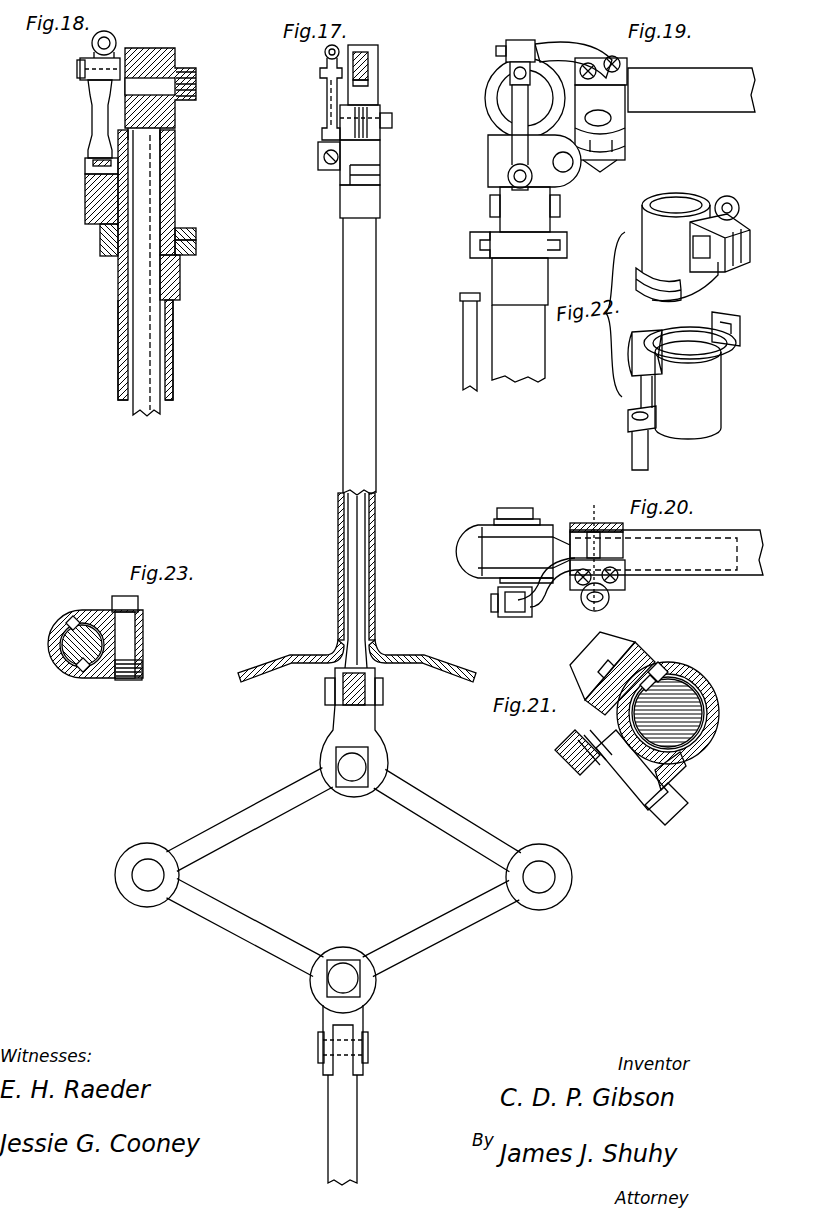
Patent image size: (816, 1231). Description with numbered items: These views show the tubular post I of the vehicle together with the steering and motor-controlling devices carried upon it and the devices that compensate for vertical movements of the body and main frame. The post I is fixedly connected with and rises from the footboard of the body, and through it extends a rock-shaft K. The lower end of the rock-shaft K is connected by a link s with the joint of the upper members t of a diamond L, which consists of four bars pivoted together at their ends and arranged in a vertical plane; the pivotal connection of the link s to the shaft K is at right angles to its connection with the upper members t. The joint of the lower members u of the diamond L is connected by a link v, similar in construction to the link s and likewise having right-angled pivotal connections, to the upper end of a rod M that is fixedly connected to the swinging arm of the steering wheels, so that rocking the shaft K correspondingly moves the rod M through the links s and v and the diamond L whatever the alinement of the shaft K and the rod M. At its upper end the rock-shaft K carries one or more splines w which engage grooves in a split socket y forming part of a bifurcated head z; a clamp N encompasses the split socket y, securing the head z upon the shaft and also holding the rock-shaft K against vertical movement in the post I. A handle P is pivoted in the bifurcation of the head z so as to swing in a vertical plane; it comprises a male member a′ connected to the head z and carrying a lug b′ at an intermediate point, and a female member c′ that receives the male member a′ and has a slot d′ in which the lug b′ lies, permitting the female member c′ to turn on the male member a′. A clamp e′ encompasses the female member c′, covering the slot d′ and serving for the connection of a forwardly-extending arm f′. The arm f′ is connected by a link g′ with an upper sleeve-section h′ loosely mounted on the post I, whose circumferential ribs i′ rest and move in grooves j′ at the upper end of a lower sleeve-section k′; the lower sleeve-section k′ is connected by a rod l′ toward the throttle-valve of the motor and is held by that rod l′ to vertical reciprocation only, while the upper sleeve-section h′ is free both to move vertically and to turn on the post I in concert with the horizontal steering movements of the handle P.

In FIG. 18, the bifurcated head z is at (184, 66).
In FIG. 17, the bifurcated head z is at (378, 80).
In FIG. 18, the link g′ is at (98, 115).
In FIG. 17, the link g′ is at (326, 96).
In FIG. 19, the link g′ is at (515, 120).
In FIG. 18, the split socket y is at (168, 150).
In FIG. 17, the split socket y is at (393, 118).
In FIG. 23, the split socket y is at (63, 625).
In FIG. 18, the clamp N is at (180, 173).
In FIG. 17, the clamp N is at (384, 131).
In FIG. 19, the clamp N is at (497, 155).
In FIG. 23, the clamp N is at (140, 630).
In FIG. 18, the splines w is at (138, 170).
In FIG. 20, the splines w is at (597, 557).
In FIG. 23, the splines w is at (76, 620).
In FIG. 18, the sleeve-section h′ is at (176, 212).
In FIG. 17, the sleeve-section h′ is at (372, 153).
In FIG. 19, the sleeve-section h′ is at (556, 228).
In FIG. 22, the sleeve-section h′ is at (677, 247).
In FIG. 18, the circumferential ribs i′ is at (192, 228).
In FIG. 19, the circumferential ribs i′ is at (490, 230).
In FIG. 22, the circumferential ribs i′ is at (684, 342).
In FIG. 18, the grooves j′ is at (190, 245).
In FIG. 19, the grooves j′ is at (567, 252).
In FIG. 22, the grooves j′ is at (716, 316).
In FIG. 18, the sleeve-section k′ is at (181, 280).
In FIG. 17, the sleeve-section k′ is at (372, 203).
In FIG. 19, the sleeve-section k′ is at (520, 281).
In FIG. 22, the sleeve-section k′ is at (688, 390).
In FIG. 18, the rock-shaft K is at (152, 370).
In FIG. 17, the rock-shaft K is at (358, 545).
In FIG. 17, the tubular post I is at (377, 362).
In FIG. 19, the tubular post I is at (518, 343).
In FIG. 17, the link s is at (378, 732).
In FIG. 17, the upper members t is at (440, 796).
In FIG. 17, the diamond L is at (343, 890).
In FIG. 17, the lower members u is at (480, 914).
In FIG. 17, the link v is at (368, 1030).
In FIG. 17, the rod M is at (366, 1104).
In FIG. 19, the forwardly-extending arm f′ is at (572, 56).
In FIG. 20, the forwardly-extending arm f′ is at (556, 600).
In FIG. 19, the handle P is at (701, 108).
In FIG. 20, the handle P is at (666, 564).
In FIG. 19, the rod l′ is at (468, 352).
In FIG. 22, the rod l′ is at (646, 452).
In FIG. 20, the male member a′ is at (728, 536).
In FIG. 21, the male member a′ is at (716, 742).
In FIG. 20, the lug b′ is at (605, 548).
In FIG. 21, the lug b′ is at (654, 670).
In FIG. 20, the female member c′ is at (688, 566).
In FIG. 20, the slot d′ is at (600, 540).
In FIG. 21, the slot d′ is at (680, 680).
In FIG. 20, the clamp e′ is at (622, 590).
In FIG. 21, the clamp e′ is at (670, 778).